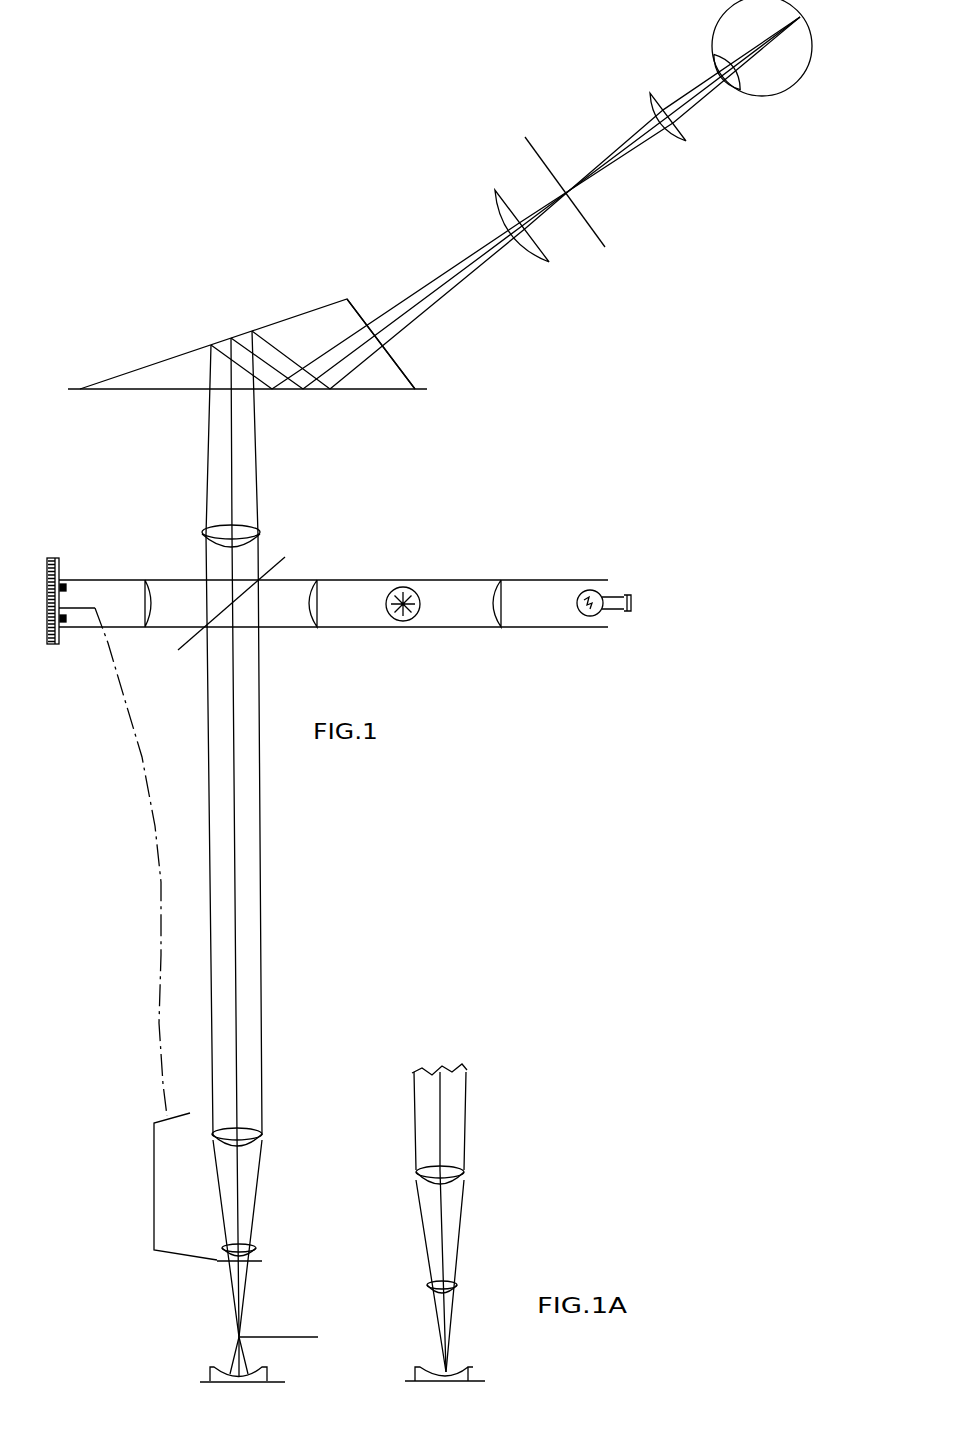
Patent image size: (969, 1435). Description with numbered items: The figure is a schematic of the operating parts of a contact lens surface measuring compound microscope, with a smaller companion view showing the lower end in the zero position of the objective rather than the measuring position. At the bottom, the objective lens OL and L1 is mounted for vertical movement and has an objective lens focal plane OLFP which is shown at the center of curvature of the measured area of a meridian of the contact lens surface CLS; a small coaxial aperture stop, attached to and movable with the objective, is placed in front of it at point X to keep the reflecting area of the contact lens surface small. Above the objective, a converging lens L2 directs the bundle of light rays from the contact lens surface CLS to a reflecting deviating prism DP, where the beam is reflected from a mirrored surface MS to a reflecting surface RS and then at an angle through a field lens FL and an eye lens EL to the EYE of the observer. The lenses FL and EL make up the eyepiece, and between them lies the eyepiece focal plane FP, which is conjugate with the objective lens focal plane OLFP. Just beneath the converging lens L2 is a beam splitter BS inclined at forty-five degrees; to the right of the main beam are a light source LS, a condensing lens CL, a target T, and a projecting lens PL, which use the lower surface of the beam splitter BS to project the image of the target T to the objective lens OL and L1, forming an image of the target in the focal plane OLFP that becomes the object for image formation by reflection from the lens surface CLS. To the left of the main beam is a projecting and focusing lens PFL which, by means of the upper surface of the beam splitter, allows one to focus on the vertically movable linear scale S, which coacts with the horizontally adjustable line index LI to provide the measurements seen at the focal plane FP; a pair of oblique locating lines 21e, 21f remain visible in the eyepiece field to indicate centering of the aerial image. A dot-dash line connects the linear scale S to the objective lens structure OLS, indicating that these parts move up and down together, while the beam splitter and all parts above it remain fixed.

In FIG. 1, the eye of the observer EYE is at (786, 88).
In FIG. 1, the eye lens EL is at (686, 142).
In FIG. 1, the eyepiece focal plane FP is at (549, 173).
In FIG. 1, the field lens FL is at (528, 246).
In FIG. 1, the mirrored surface MS is at (324, 282).
In FIG. 1, the reflecting deviating prism DP is at (185, 391).
In FIG. 1, the reflecting surface RS is at (393, 391).
In FIG. 1, the converging lens L2 is at (262, 530).
In FIG. 1, the beam splitter BS is at (286, 558).
In FIG. 1, the projecting and focusing lens PFL is at (150, 614).
In FIG. 1, the projecting lens PL is at (319, 590).
In FIG. 1, the target T is at (405, 587).
In FIG. 1, the condensing lens CL is at (500, 598).
In FIG. 1, the light source LS is at (587, 590).
In FIG. 1, the linear scale S is at (53, 559).
In FIG. 1, the oblique locating line 21f is at (63, 587).
In FIG. 1, the oblique locating line 21e is at (65, 624).
In FIG. 1, the line index LI is at (80, 612).
In FIG. 1, the objective lens structure OLS is at (165, 1177).
In FIG. 1, the objective lens element L1 is at (258, 1133).
In FIG. 1A, the objective lens element L1 is at (452, 1173).
In FIG. 1, the objective lens OL is at (255, 1246).
In FIG. 1A, the objective lens OL is at (458, 1284).
In FIG. 1, the aperture stop location X is at (228, 1264).
In FIG. 1, the objective lens focal plane OLFP is at (248, 1336).
In FIG. 1, the contact lens surface CLS is at (268, 1376).
In FIG. 1A, the contact lens surface CLS is at (470, 1374).